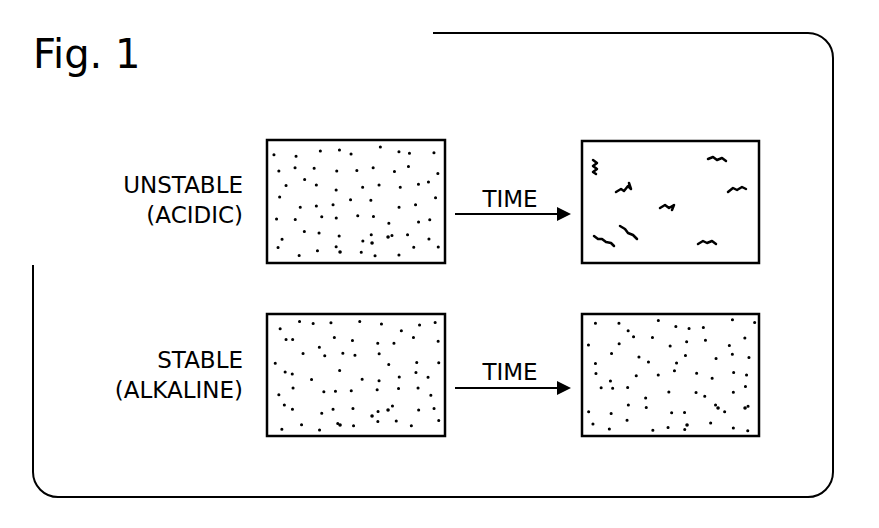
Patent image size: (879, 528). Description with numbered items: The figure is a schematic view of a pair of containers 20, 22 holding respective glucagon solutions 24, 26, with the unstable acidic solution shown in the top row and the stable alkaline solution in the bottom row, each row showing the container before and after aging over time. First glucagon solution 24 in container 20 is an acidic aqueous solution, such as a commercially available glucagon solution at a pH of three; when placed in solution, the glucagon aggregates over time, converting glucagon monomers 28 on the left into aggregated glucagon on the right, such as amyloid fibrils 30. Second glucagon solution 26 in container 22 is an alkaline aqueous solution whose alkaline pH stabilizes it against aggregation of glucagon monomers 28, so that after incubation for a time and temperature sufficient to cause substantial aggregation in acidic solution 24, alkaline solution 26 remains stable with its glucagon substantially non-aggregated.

The container 20 is at (271, 133).
The container 22 is at (271, 308).
The first glucagon solution 24 is at (355, 147).
The second glucagon solution 26 is at (355, 322).
The glucagon monomers 28 is at (340, 254).
The amyloid fibrils 30 is at (665, 205).